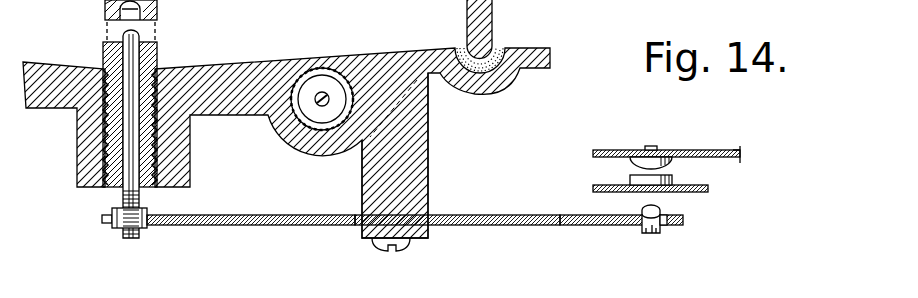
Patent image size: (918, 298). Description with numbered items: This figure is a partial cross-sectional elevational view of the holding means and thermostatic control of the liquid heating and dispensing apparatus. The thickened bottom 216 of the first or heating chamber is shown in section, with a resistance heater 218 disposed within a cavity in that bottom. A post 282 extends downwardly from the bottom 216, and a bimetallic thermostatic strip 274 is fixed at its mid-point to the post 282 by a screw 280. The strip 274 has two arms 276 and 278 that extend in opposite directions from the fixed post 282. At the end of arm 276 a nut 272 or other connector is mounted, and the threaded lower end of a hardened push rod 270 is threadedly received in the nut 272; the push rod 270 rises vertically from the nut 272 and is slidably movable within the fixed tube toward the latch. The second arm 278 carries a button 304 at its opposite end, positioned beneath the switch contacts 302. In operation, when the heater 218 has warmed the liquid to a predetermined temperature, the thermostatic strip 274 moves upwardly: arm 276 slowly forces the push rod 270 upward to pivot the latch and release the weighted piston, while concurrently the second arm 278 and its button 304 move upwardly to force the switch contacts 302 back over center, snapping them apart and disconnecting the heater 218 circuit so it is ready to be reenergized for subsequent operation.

The bottom 216 is at (393, 50).
The resistance heater 218 is at (324, 68).
The push rod 270 is at (153, 150).
The nut 272 is at (143, 226).
The bimetallic thermostatic strip 274 is at (447, 227).
The arm 276 is at (245, 227).
The second arm 278 is at (580, 227).
The screw 280 is at (386, 250).
The post 282 is at (428, 150).
The switch contacts 302 is at (715, 177).
The button 304 is at (652, 232).